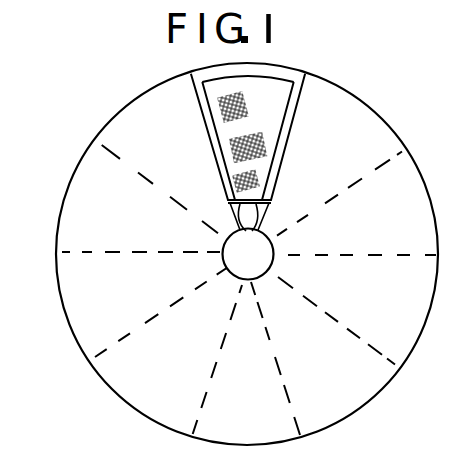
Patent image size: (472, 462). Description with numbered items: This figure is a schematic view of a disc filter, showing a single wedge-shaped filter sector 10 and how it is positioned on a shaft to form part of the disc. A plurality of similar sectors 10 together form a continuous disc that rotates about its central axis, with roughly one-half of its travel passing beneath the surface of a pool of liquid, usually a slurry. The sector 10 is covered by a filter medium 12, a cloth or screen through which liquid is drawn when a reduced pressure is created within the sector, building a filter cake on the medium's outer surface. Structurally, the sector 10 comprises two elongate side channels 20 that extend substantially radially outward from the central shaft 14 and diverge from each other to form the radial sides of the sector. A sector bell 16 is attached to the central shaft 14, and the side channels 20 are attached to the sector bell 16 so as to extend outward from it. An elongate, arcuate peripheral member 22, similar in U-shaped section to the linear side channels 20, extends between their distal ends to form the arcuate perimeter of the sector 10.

The filter sector 10 is at (294, 67).
The filter medium 12 is at (273, 117).
The central shaft 14 is at (250, 254).
The sector bell 16 is at (262, 213).
The side channels 20 is at (213, 141).
The peripheral member 22 is at (233, 72).